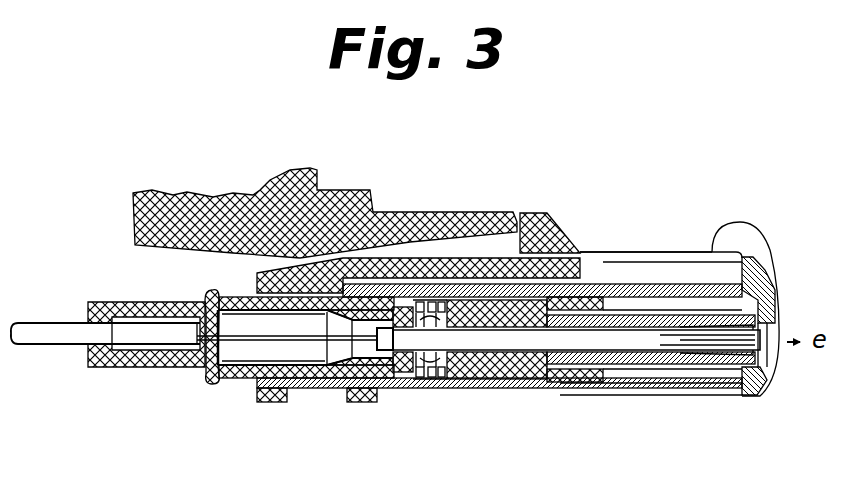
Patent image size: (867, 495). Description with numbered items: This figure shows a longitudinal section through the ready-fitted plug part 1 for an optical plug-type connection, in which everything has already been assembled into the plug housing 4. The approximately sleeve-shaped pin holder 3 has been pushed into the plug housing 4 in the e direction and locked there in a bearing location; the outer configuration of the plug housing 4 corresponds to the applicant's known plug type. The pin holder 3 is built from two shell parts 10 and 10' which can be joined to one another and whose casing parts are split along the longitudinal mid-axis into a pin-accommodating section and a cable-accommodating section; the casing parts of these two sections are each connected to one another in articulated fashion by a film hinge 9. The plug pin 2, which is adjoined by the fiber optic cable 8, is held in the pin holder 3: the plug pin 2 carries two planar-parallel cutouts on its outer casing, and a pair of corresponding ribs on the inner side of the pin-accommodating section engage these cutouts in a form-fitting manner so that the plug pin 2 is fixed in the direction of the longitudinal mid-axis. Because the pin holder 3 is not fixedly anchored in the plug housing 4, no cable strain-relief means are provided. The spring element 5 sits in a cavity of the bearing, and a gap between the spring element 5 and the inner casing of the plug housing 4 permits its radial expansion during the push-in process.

The plug part 1 is at (333, 152).
The plug pin 2 is at (760, 290).
The pin holder 3 is at (88, 300).
The plug housing 4 is at (613, 267).
The spring element 5 is at (468, 293).
The fiber optic cable 8 is at (37, 337).
The film hinge 9 is at (423, 357).
The shell part 10 is at (295, 389).
The shell part 10' is at (244, 262).